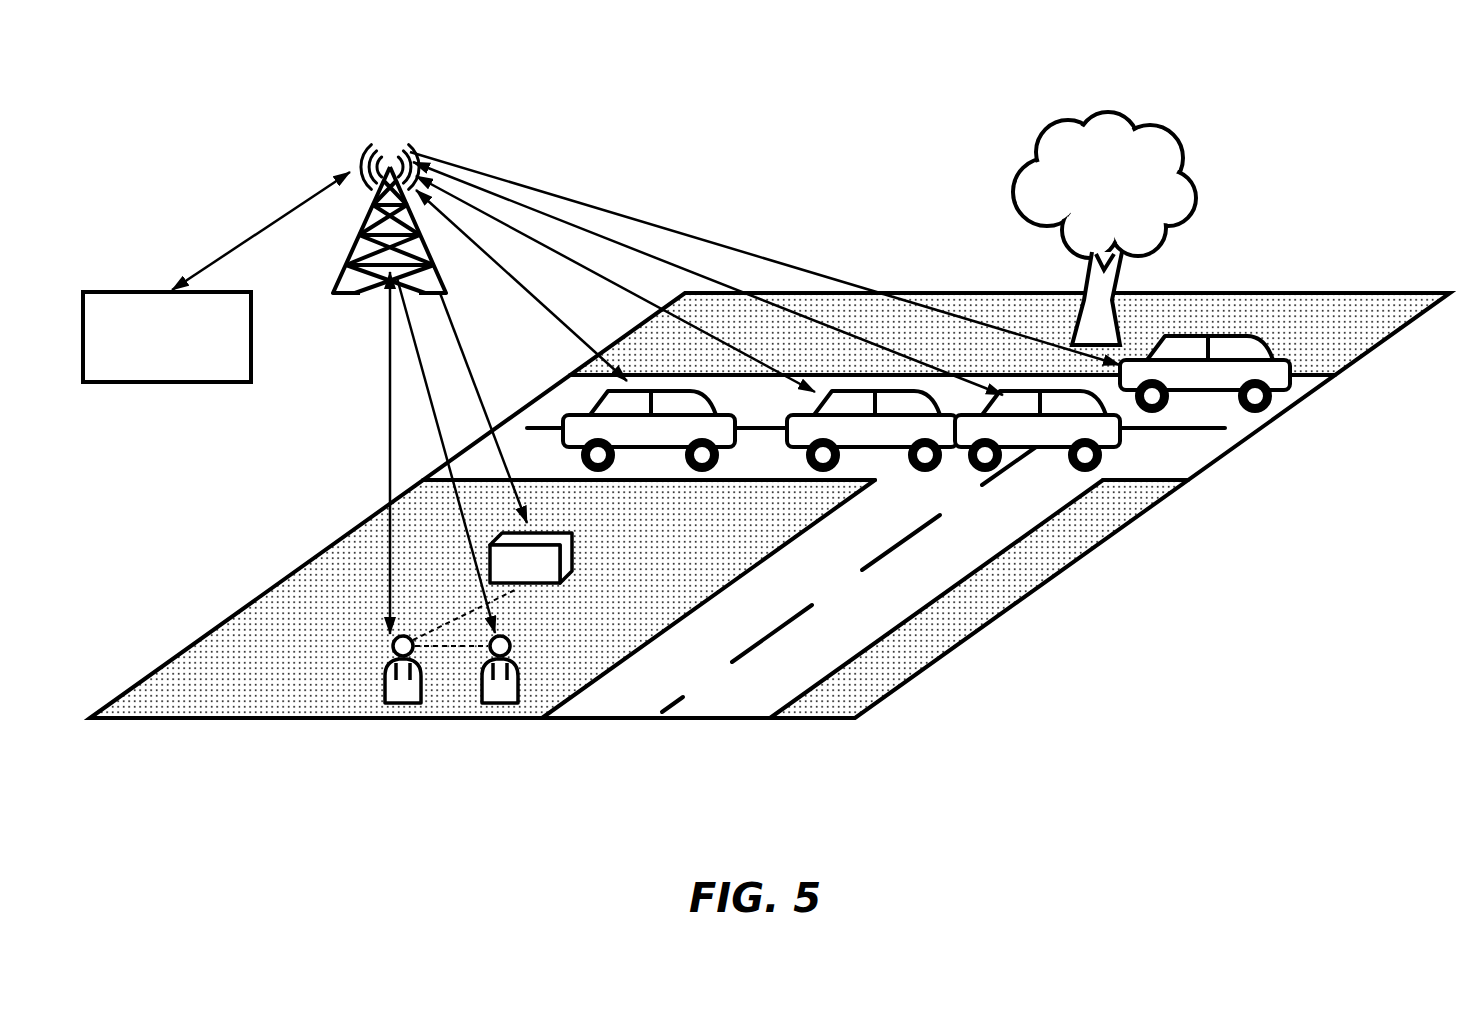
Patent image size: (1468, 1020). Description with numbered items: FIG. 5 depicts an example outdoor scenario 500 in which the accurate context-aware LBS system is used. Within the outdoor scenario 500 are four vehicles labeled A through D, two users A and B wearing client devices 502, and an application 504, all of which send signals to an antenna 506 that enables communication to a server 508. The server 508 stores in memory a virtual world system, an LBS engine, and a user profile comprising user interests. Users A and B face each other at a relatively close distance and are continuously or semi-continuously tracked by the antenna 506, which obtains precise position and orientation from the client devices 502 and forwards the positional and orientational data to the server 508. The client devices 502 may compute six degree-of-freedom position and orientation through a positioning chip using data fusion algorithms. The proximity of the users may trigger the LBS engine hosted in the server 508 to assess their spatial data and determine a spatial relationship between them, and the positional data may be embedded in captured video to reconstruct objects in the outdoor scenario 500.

The outdoor scenario 500 is at (158, 51).
The client devices 502 is at (403, 640).
The application 504 is at (489, 549).
The antenna 506 is at (392, 165).
The server 508 is at (147, 292).